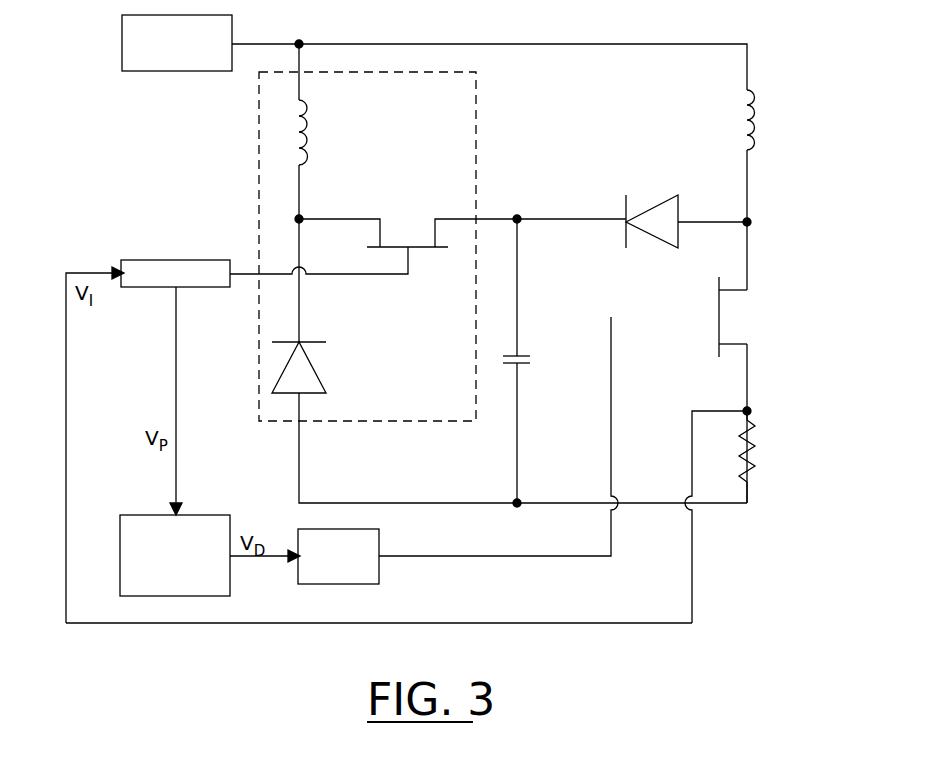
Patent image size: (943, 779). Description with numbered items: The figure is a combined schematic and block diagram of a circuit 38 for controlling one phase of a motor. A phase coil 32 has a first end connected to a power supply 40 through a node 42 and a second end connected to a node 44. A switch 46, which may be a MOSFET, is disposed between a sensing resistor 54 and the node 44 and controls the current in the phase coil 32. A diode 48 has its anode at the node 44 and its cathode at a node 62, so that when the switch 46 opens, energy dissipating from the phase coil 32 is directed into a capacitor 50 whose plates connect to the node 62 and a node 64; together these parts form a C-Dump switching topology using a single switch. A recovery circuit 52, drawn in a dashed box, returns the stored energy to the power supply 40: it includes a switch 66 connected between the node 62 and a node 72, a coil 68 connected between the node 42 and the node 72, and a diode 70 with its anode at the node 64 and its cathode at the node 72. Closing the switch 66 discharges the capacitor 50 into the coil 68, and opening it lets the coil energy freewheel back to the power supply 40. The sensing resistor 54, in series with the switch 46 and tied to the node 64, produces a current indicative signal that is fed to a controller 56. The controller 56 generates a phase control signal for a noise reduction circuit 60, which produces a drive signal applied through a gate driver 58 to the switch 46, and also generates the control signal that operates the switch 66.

The circuit 38 is at (762, 48).
The power supply 40 is at (122, 43).
The node 42 is at (302, 43).
The phase coil 32 is at (755, 128).
The node 44 is at (751, 221).
The diode 48 is at (656, 205).
The switch 46 is at (716, 326).
The sensing resistor 54 is at (754, 452).
The capacitor 50 is at (522, 355).
The node 62 is at (520, 216).
The node 64 is at (520, 500).
The recovery circuit 52 is at (259, 123).
The coil 68 is at (312, 142).
The node 72 is at (302, 217).
The switch 66 is at (423, 250).
The diode 70 is at (316, 372).
The controller 56 is at (150, 260).
The noise reduction circuit 60 is at (130, 515).
The gate driver 58 is at (380, 545).